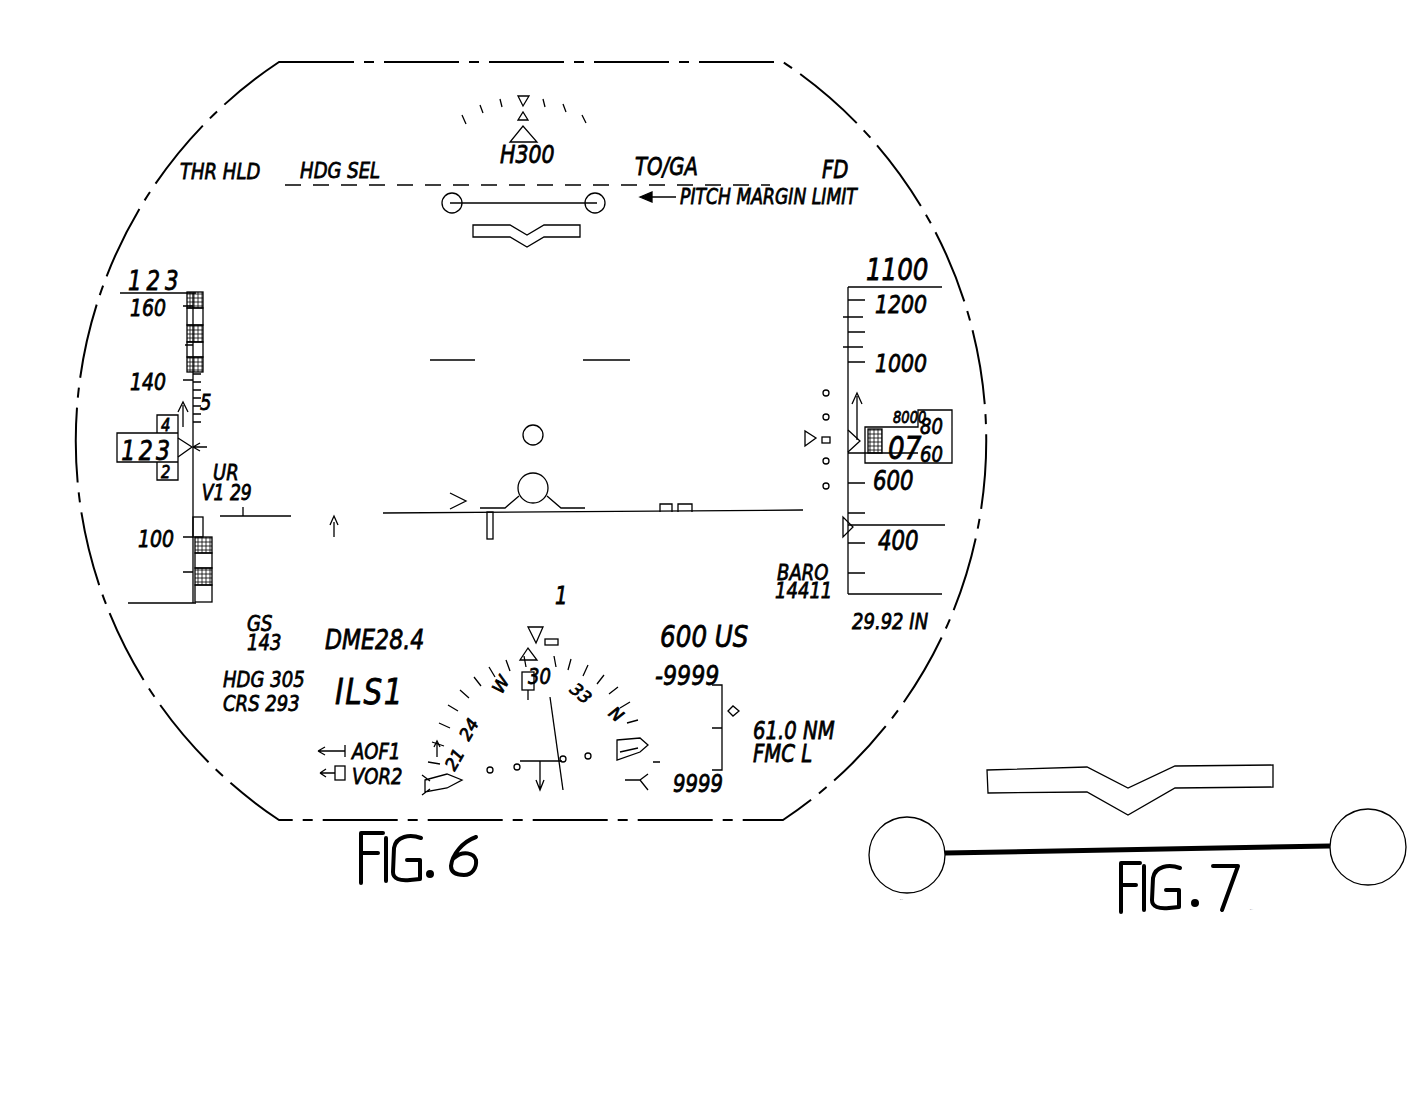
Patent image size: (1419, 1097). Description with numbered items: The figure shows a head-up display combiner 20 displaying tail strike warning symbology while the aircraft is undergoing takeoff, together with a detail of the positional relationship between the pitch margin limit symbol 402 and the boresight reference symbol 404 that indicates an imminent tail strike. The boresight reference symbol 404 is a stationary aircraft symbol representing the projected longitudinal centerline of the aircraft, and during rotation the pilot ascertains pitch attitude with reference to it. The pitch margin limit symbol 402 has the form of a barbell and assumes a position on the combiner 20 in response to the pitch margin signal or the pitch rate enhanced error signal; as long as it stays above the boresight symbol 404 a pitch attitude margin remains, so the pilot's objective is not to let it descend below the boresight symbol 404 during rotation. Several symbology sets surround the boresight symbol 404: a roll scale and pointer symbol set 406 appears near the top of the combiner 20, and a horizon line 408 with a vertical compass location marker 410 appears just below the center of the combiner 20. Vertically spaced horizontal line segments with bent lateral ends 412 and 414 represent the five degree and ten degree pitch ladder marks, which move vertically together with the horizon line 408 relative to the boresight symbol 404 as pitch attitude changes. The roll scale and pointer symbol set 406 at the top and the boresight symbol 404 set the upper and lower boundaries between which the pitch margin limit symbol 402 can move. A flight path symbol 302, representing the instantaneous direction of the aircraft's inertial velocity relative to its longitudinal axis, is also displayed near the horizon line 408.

In FIG. 6, the combiner 20 is at (902, 160).
In FIG. 6, the roll scale and pointer symbol set 406 is at (543, 86).
In FIG. 6, the horizontal line segments with bent lateral ends 414 is at (424, 240).
In FIG. 6, the boresight reference symbol 404 is at (555, 238).
In FIG. 7, the boresight reference symbol 404 is at (1245, 772).
In FIG. 6, the horizontal line segments with bent lateral ends 412 is at (617, 390).
In FIG. 6, the flight path symbol 302 is at (563, 505).
In FIG. 6, the horizon line 408 is at (742, 512).
In FIG. 6, the vertical compass location marker 410 is at (388, 508).
In FIG. 7, the pitch margin limit symbol 402 is at (1353, 815).